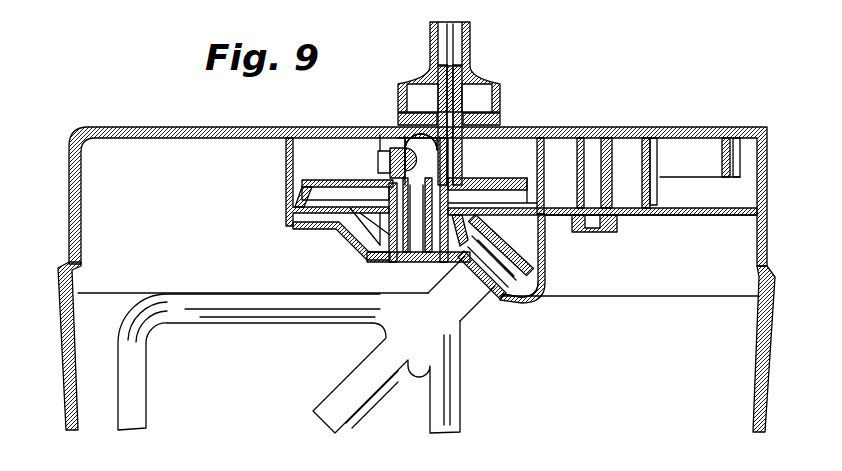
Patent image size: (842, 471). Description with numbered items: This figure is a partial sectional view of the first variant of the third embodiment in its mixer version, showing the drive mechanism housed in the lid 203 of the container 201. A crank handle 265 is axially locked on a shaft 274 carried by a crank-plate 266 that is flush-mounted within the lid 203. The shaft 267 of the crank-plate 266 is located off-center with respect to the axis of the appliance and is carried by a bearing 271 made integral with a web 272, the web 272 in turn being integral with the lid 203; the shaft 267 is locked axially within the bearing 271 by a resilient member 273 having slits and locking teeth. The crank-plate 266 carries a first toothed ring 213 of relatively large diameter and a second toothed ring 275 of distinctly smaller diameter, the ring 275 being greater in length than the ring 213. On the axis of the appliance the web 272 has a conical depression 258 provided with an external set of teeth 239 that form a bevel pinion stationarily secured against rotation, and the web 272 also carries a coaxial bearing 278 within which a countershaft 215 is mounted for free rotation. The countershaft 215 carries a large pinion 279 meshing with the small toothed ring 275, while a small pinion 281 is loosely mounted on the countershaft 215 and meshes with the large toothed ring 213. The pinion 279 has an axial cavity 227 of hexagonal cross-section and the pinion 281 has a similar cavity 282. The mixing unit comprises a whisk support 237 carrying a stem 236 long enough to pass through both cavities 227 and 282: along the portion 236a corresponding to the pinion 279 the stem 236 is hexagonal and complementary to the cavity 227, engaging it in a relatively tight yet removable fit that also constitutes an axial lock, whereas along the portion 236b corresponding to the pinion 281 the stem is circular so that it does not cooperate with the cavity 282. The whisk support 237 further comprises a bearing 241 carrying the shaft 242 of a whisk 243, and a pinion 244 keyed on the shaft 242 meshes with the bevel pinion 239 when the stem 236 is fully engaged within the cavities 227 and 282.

The container 201 is at (768, 386).
The lid 203 is at (777, 201).
The first toothed ring 213 is at (740, 157).
The countershaft 215 is at (492, 222).
The axial cavity 227 is at (412, 262).
The stem 236 is at (433, 274).
The hexagonal stem portion 236a is at (429, 256).
The circular stem portion 236b is at (432, 155).
The whisk support 237 is at (522, 304).
The external set of teeth 239 is at (362, 253).
The bearing 241 is at (478, 303).
The whisk shaft 242 is at (467, 330).
The whisk 243 is at (231, 326).
The pinion 244 is at (538, 283).
The conical depression 258 is at (340, 237).
The crank handle 265 is at (471, 44).
The crank-plate 266 is at (704, 130).
The shaft 267 is at (592, 137).
The bearing 271 is at (614, 152).
The web 272 is at (706, 220).
The resilient member 273 is at (598, 222).
The shaft 274 is at (470, 80).
The second toothed ring 275 is at (657, 193).
The bearing 278 is at (368, 262).
The large pinion 279 is at (302, 187).
The small pinion 281 is at (388, 130).
The cavity 282 is at (378, 165).